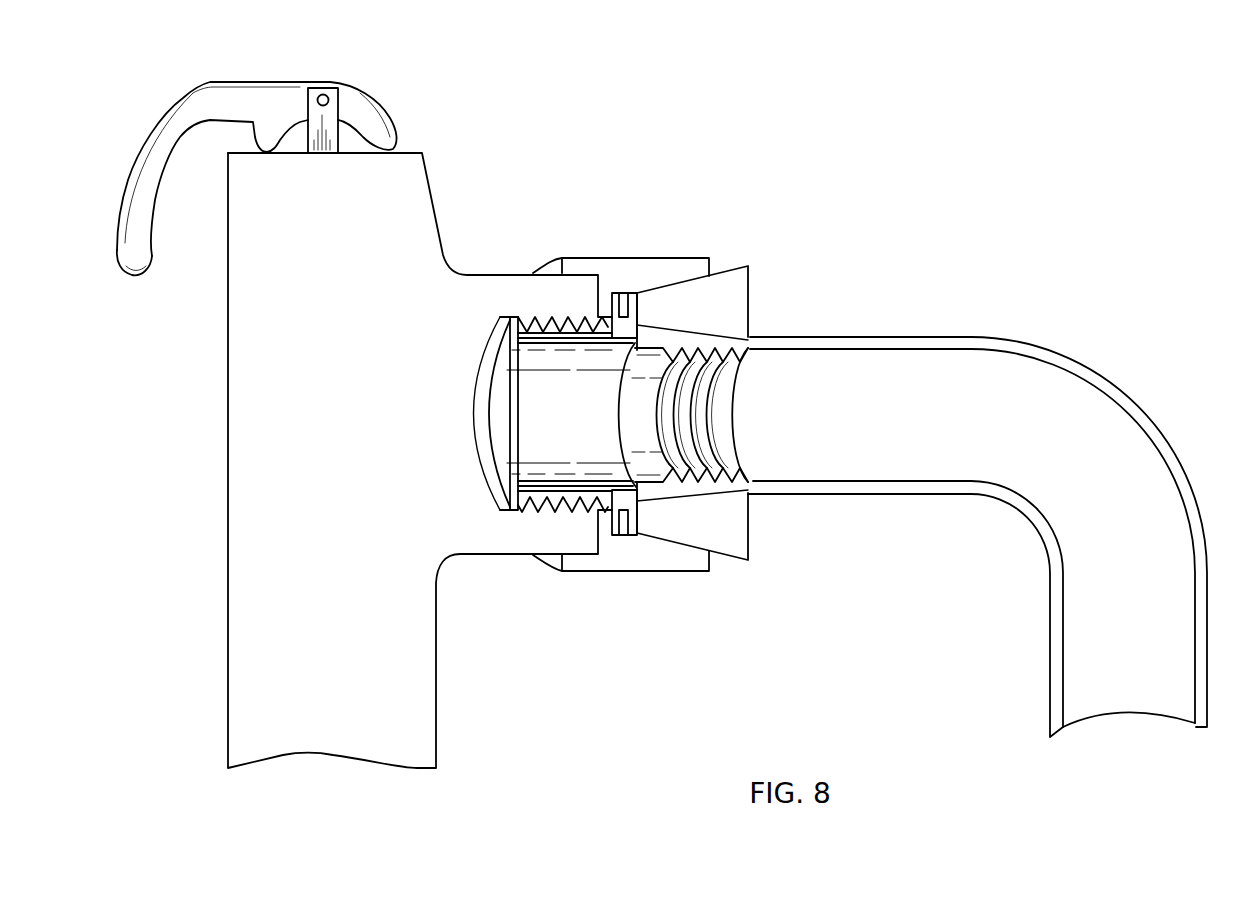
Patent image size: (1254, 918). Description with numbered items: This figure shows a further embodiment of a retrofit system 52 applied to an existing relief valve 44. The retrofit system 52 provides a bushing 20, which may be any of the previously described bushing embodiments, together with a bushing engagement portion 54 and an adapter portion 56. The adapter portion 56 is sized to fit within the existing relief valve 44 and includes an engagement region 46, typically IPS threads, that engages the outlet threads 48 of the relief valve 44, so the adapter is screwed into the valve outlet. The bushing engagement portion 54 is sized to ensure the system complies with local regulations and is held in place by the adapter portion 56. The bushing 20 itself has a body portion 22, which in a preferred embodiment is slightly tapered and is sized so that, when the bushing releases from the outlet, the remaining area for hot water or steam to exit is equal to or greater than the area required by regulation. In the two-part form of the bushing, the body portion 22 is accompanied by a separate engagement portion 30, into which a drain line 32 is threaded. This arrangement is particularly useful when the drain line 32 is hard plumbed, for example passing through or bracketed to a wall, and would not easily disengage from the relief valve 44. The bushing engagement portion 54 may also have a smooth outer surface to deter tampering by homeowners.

The bushing 20 is at (808, 260).
The body portion 22 is at (718, 300).
The engagement portion 30 is at (767, 337).
The drain line 32 is at (982, 337).
The relief valve 44 is at (467, 275).
The engagement region 46 is at (553, 327).
The outlet threads 48 is at (532, 505).
The retrofit system 52 is at (1077, 139).
The bushing engagement portion 54 is at (640, 272).
The adapter portion 56 is at (611, 343).